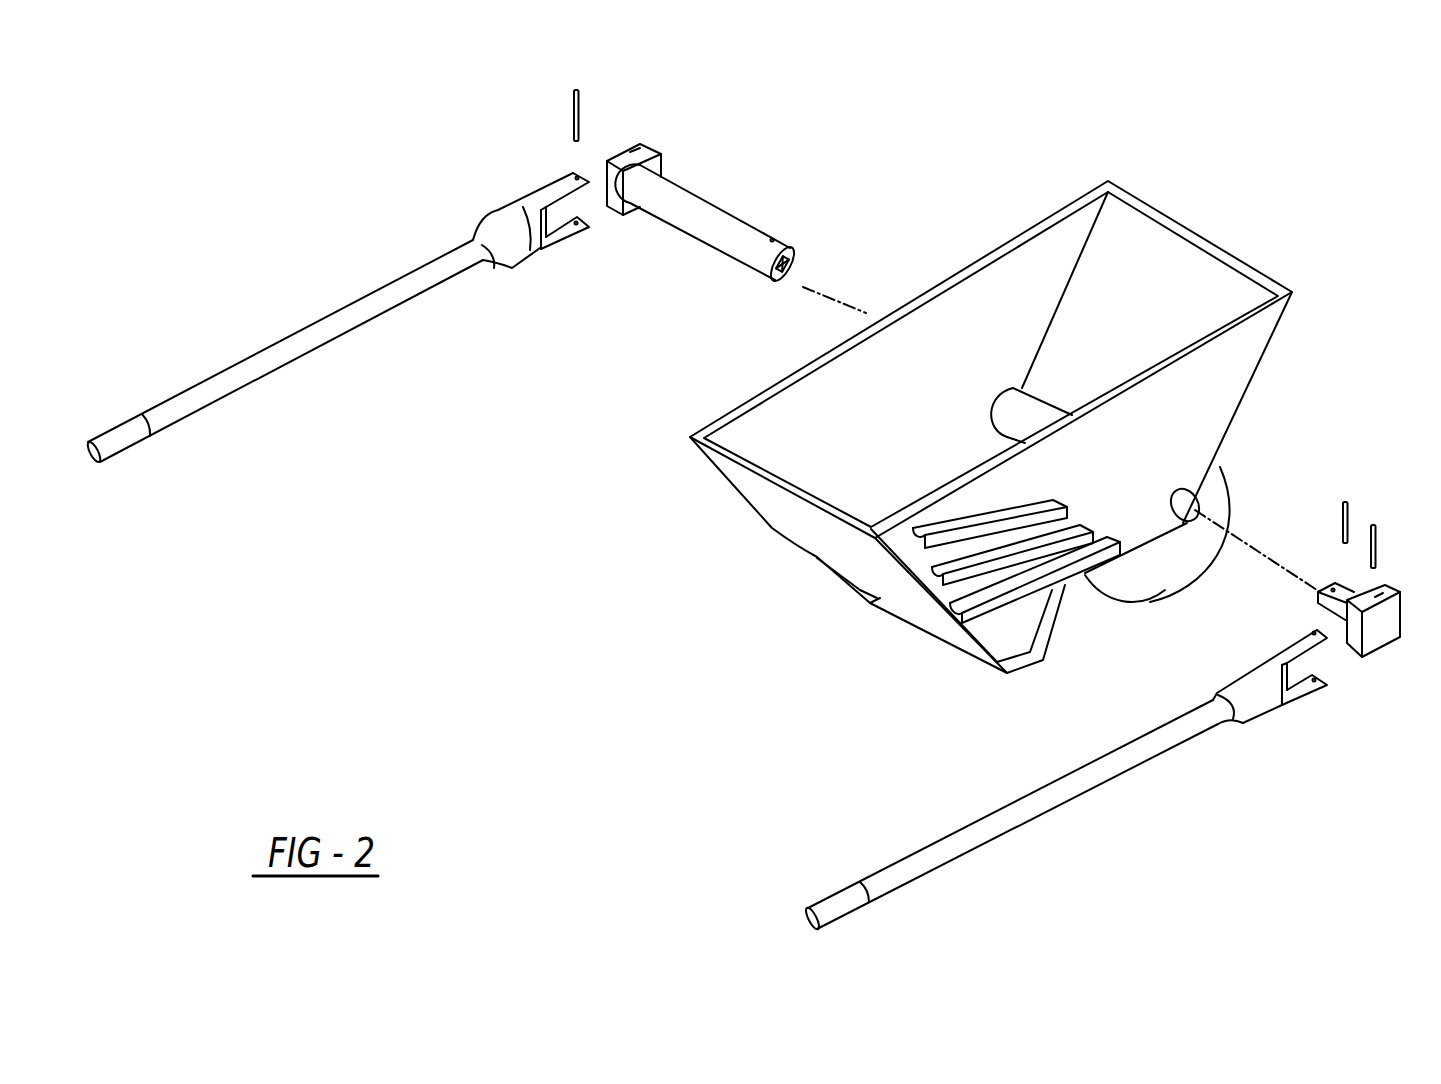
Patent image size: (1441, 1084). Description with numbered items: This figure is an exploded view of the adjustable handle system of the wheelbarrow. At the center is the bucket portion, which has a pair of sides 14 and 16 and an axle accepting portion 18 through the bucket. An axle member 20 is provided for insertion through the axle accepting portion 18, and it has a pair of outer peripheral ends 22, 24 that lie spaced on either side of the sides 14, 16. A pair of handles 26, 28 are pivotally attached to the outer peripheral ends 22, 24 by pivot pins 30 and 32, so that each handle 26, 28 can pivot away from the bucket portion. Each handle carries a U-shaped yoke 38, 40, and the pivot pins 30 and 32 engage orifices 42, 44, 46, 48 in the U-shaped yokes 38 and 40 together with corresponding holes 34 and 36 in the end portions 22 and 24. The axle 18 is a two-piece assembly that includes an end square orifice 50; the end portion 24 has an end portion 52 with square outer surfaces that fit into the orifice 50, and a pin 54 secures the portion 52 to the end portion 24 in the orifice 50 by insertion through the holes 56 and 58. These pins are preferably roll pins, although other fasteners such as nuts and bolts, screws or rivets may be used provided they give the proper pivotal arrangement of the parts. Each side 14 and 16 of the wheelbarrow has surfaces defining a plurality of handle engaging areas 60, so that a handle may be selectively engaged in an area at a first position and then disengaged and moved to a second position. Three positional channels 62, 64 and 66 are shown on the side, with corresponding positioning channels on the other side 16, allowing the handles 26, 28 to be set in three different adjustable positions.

The side 14 is at (1208, 376).
The side 16 is at (1007, 290).
The axle accepting portion 18 is at (1035, 418).
The axle member 20 is at (707, 207).
The outer peripheral end 22 is at (613, 153).
The outer peripheral end 24 is at (1377, 633).
The handle 26 is at (1027, 810).
The handle 28 is at (306, 357).
The pivot pin 30 is at (572, 101).
The pivot pin 32 is at (1373, 525).
The hole 34 is at (1378, 596).
The hole 36 is at (638, 150).
The U-shaped yoke 38 is at (506, 230).
The U-shaped yoke 40 is at (1262, 712).
The orifice 42 is at (1318, 688).
The orifice 44 is at (1317, 633).
The orifice 46 is at (575, 173).
The orifice 48 is at (578, 226).
The end square orifice 50 is at (793, 263).
The end portion 52 is at (1318, 593).
The pin 54 is at (1345, 500).
The hole 56 is at (772, 240).
The hole 58 is at (1333, 590).
The handle engaging areas 60 is at (1088, 487).
The positional channel 62 is at (912, 548).
The positional channel 64 is at (943, 578).
The positional channel 66 is at (953, 620).